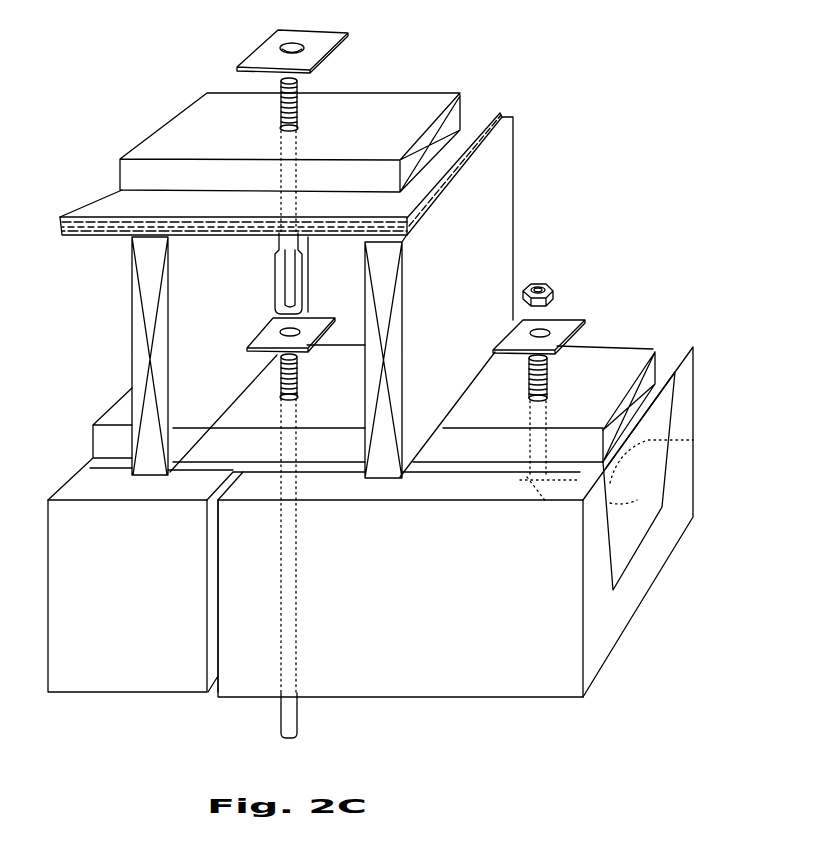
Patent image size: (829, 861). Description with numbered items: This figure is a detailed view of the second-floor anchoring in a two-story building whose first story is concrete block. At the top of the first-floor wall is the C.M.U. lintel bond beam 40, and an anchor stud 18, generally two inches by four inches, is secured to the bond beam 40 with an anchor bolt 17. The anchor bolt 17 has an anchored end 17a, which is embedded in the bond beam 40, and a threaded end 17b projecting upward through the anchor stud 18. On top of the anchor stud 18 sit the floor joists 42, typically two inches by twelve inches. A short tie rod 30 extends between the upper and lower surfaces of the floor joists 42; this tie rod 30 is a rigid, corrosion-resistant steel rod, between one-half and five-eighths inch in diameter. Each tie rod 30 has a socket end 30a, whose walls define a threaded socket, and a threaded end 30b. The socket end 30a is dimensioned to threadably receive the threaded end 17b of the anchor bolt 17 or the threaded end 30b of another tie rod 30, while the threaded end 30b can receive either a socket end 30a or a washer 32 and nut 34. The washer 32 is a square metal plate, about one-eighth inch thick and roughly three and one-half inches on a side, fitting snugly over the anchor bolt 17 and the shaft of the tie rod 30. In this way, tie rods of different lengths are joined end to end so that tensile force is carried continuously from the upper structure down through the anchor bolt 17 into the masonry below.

The anchor bolt 17 is at (520, 478).
The anchored end 17a is at (690, 434).
The threaded end 17b is at (568, 416).
The anchor stud 18 is at (608, 365).
The tie rod 30 is at (300, 702).
The socket end 30a is at (272, 293).
The threaded end 30b is at (298, 82).
The washer 32 is at (268, 47).
The nut 34 is at (553, 290).
The C.M.U. lintel bond beam 40 is at (389, 611).
The floor joists 42 is at (213, 386).